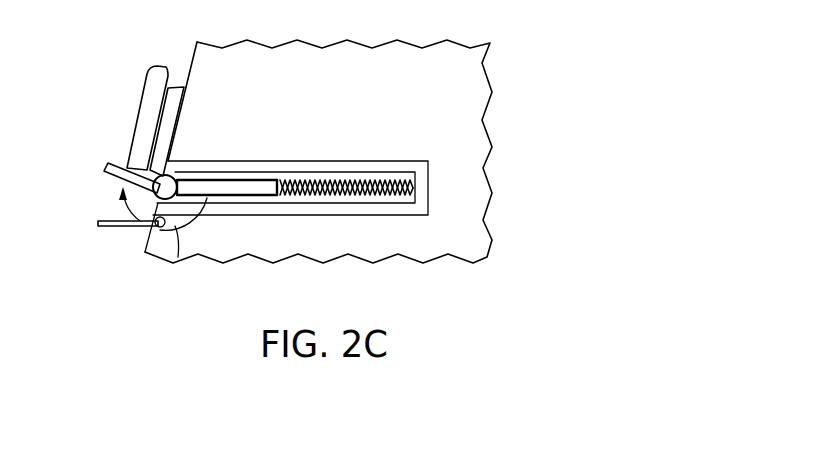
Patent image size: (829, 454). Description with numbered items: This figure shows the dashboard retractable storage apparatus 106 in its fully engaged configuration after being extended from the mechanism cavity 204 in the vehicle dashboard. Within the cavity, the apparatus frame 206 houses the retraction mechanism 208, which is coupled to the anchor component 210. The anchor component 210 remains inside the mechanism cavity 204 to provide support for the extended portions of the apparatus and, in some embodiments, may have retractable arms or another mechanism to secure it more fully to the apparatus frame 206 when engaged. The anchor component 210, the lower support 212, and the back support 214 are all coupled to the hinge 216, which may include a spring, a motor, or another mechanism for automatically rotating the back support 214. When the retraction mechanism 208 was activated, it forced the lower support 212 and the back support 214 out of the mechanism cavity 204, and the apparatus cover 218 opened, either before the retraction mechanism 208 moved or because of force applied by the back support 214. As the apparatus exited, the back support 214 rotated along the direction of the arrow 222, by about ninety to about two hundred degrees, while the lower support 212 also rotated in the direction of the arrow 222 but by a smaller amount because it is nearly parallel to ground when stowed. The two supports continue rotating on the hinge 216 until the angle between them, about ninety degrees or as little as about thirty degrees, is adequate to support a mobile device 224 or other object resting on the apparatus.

The dashboard retractable storage apparatus 106 is at (497, 350).
The mechanism cavity 204 is at (412, 216).
The apparatus frame 206 is at (332, 172).
The retraction mechanism 208 is at (398, 183).
The anchor component 210 is at (243, 197).
The lower support 212 is at (107, 166).
The back support 214 is at (175, 87).
The hinge 216 is at (172, 175).
The apparatus cover 218 is at (110, 228).
The arrow 222 is at (178, 252).
The mobile device 224 is at (136, 128).